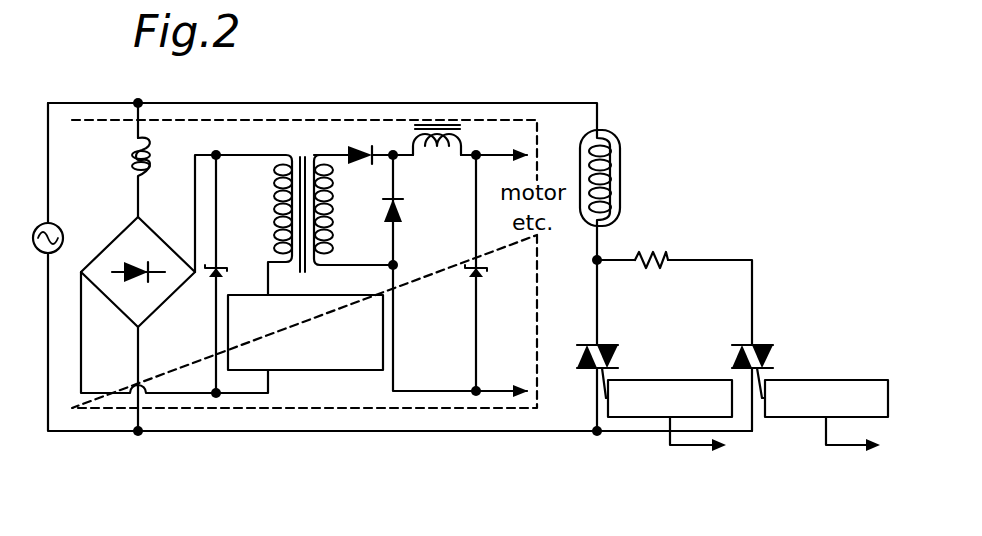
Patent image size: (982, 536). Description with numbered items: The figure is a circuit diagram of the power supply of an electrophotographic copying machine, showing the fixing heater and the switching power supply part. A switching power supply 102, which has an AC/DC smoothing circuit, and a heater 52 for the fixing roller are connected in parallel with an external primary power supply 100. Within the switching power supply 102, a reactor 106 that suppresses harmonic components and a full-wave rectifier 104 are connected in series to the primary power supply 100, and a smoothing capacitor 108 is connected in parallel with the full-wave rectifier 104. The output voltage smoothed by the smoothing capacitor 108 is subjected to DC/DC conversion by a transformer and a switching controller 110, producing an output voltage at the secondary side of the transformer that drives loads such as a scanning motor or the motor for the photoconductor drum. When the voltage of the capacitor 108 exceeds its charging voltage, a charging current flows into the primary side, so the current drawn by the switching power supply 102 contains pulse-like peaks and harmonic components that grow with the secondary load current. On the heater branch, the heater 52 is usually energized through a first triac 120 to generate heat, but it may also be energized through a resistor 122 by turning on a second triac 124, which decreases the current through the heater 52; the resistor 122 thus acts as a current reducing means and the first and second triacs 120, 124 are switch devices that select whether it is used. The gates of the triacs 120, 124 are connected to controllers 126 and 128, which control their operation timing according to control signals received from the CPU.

The heater 52 is at (622, 168).
The primary power supply 100 is at (52, 222).
The switching power supply 102 is at (95, 409).
The full-wave rectifier 104 is at (97, 254).
The reactor 106 is at (128, 166).
The smoothing capacitor 108 is at (250, 250).
The switching controller 110 is at (310, 370).
The first triac 120 is at (608, 345).
The resistor 122 is at (656, 257).
The second triac 124 is at (763, 345).
The controller 126 is at (658, 380).
The controller 128 is at (816, 380).